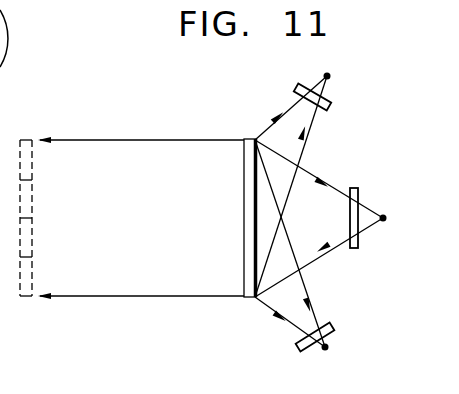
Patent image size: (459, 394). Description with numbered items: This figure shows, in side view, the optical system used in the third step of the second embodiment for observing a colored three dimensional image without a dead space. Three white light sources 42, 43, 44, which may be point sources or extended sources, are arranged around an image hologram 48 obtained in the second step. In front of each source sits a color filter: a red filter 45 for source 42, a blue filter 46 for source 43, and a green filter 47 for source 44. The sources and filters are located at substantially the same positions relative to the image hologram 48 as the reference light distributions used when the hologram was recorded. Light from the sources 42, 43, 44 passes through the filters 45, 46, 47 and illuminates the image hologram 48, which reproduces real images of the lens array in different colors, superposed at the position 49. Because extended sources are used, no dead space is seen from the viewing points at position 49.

The white light source 42 is at (329, 73).
The white light source 43 is at (385, 215).
The white light source 44 is at (327, 350).
The red filter 45 is at (327, 107).
The blue filter 46 is at (349, 226).
The green filter 47 is at (331, 326).
The image hologram 48 is at (244, 213).
The position of the real image of the lens array 49 is at (33, 198).